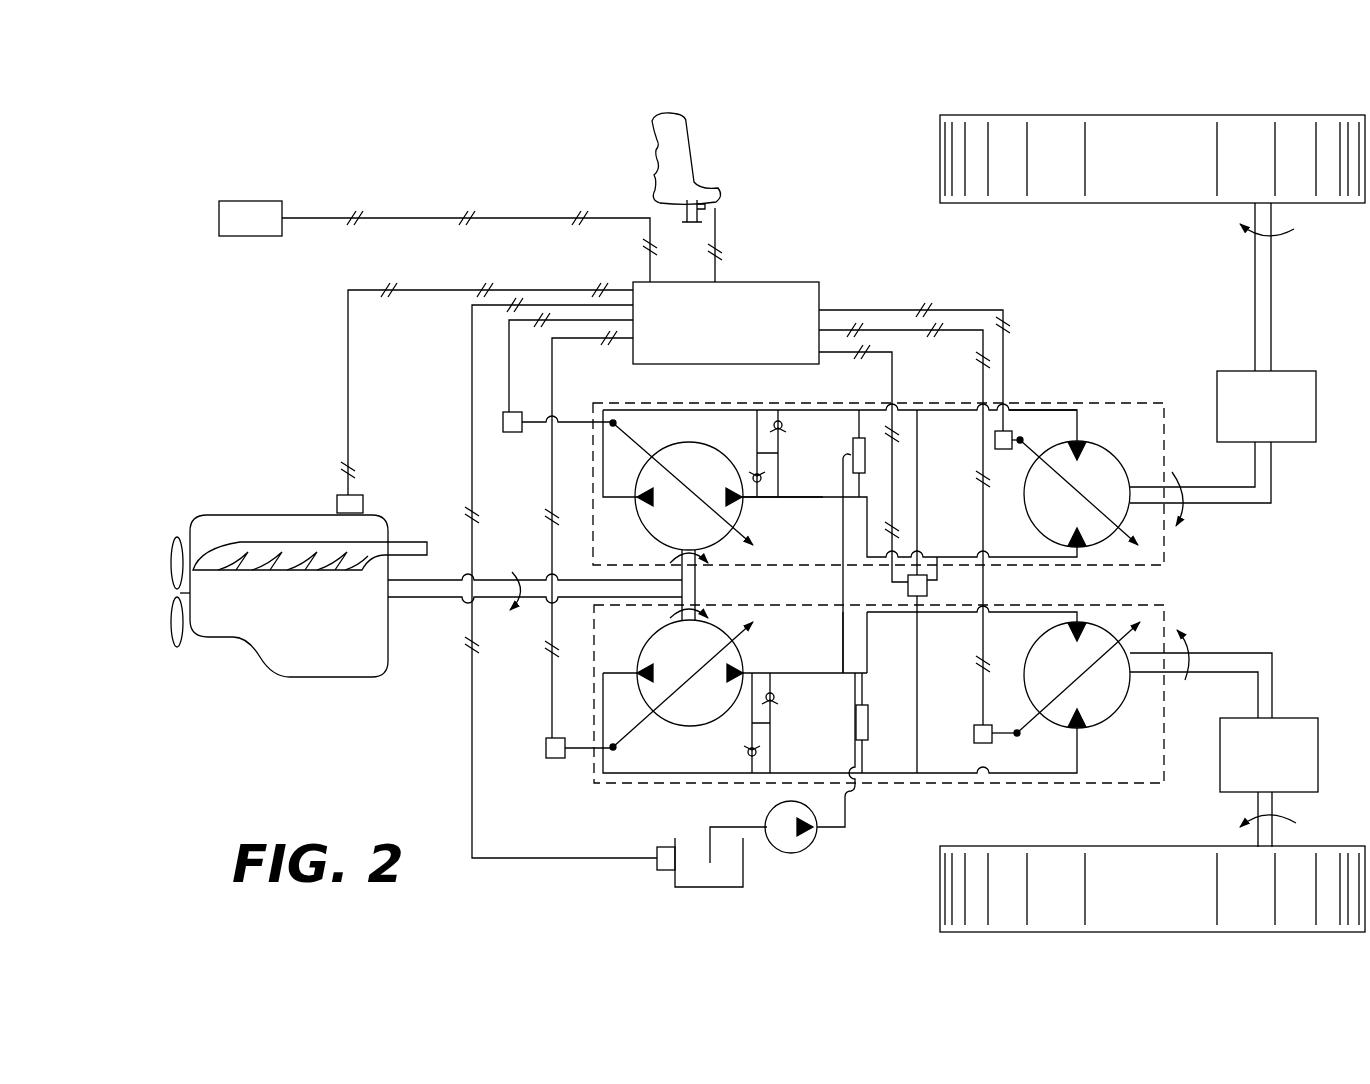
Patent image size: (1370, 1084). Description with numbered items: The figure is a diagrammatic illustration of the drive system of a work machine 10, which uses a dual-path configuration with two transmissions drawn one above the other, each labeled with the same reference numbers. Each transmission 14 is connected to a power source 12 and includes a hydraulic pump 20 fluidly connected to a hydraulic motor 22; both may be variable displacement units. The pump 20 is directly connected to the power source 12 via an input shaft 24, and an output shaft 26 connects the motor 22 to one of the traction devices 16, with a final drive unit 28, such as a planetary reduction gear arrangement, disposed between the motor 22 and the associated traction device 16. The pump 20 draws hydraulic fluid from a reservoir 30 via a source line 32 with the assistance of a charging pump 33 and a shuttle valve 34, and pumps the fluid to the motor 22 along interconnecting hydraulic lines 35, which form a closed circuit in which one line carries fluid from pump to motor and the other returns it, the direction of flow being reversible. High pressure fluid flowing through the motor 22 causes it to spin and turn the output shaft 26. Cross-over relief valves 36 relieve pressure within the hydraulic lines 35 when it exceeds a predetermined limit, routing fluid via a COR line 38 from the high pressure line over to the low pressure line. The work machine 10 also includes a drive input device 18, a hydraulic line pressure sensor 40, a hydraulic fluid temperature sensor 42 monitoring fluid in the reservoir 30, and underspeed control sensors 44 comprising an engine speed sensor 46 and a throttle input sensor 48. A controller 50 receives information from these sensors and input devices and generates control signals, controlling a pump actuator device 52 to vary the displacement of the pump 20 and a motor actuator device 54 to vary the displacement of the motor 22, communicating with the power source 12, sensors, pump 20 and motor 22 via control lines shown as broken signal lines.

The work machine 10 is at (303, 147).
The power source 12 is at (266, 631).
The transmission 14 is at (1100, 402).
The traction device 16 is at (1130, 125).
The drive input device 18 is at (704, 146).
The hydraulic pump 20 is at (672, 533).
The hydraulic motor 22 is at (1038, 513).
The input shaft 24 is at (419, 598).
The output shaft 26 is at (1214, 503).
The final drive unit 28 is at (1249, 404).
The reservoir 30 is at (743, 860).
The source line 32 is at (710, 845).
The charging pump 33 is at (810, 845).
The shuttle valve 34 is at (853, 452).
The hydraulic lines 35 is at (823, 497).
The cross-over relief valve 36 is at (782, 430).
The COR line 38 is at (753, 446).
The hydraulic line pressure sensor 40 is at (908, 585).
The hydraulic fluid temperature sensor 42 is at (663, 868).
The underspeed control sensors 44 is at (245, 253).
The engine speed sensor 46 is at (362, 503).
The throttle input sensor 48 is at (240, 222).
The controller 50 is at (745, 290).
The pump actuator device 52 is at (512, 432).
The motor actuator device 54 is at (1003, 450).